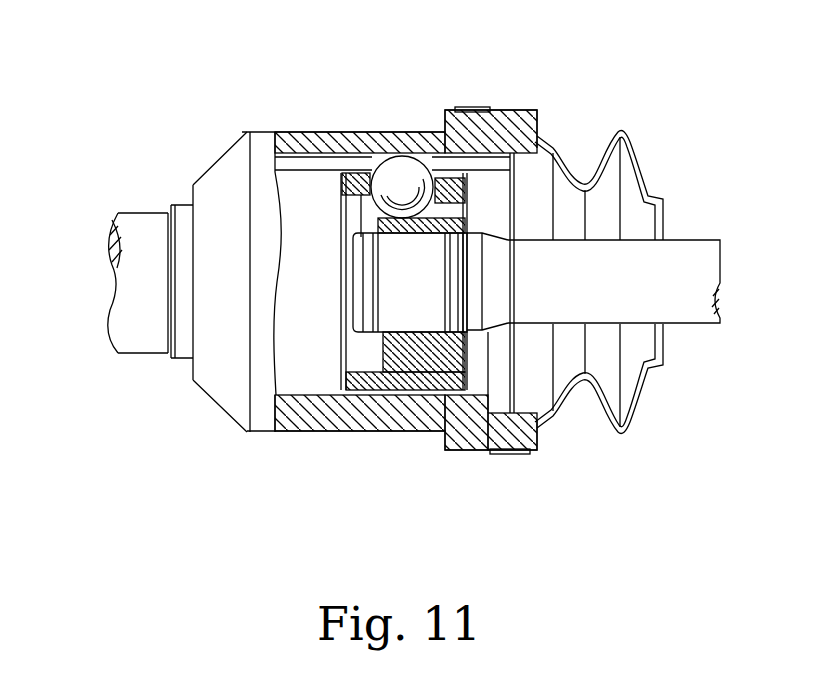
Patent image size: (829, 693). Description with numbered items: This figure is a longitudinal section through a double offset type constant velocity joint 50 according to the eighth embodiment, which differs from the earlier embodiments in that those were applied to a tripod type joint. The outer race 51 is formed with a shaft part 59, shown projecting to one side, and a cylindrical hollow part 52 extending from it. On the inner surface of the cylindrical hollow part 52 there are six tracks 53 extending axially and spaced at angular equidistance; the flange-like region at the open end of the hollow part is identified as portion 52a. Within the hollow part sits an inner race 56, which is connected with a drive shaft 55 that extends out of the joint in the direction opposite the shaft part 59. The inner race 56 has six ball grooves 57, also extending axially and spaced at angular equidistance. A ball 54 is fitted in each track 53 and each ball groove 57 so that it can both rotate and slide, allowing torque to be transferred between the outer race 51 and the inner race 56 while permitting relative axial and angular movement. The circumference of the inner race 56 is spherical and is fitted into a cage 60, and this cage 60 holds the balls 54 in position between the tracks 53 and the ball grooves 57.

The double offset type constant velocity joint 50 is at (499, 100).
The outer race 51 is at (279, 440).
The cylindrical hollow part 52 is at (279, 136).
The flange portion of outer race 52a is at (540, 129).
The track 53 is at (322, 163).
The ball 54 is at (402, 160).
The drive shaft 55 is at (693, 252).
The inner race 56 is at (413, 365).
The ball groove 57 is at (457, 184).
The shaft part 59 is at (137, 218).
The cage 60 is at (350, 397).